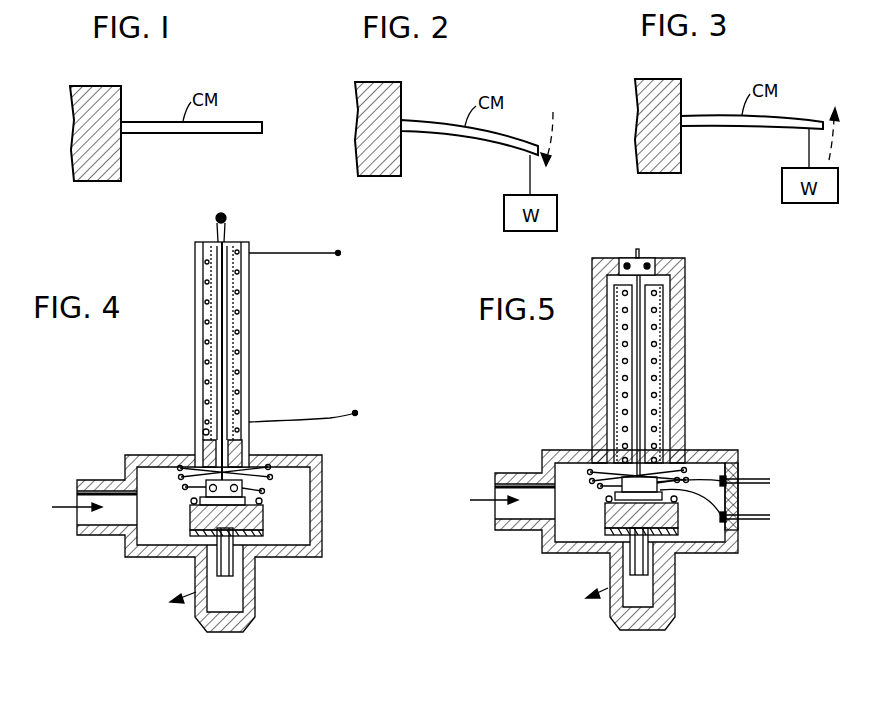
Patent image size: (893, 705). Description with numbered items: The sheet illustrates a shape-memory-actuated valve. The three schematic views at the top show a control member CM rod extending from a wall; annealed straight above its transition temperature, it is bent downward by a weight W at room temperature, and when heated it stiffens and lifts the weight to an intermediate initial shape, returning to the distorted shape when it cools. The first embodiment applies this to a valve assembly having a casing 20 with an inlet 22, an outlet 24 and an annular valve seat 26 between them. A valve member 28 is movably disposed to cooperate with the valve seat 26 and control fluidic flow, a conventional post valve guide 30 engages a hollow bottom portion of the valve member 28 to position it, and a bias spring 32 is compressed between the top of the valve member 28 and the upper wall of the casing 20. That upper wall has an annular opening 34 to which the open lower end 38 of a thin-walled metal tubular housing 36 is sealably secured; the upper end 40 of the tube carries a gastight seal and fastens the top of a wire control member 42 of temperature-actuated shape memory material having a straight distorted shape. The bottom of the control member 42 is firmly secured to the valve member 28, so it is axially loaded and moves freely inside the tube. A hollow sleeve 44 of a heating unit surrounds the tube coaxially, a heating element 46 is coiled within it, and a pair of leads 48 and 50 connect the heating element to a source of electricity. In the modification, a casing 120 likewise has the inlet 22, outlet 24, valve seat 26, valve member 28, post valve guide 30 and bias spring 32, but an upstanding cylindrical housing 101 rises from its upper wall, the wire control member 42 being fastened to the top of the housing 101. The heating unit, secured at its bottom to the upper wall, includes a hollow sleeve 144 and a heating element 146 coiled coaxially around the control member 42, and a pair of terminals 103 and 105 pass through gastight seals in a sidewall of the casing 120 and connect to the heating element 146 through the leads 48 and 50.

In FIG. 4, the casing 20 is at (322, 527).
In FIG. 5, the casing 20 is at (616, 540).
In FIG. 4, the inlet 22 is at (80, 515).
In FIG. 5, the inlet 22 is at (503, 510).
In FIG. 4, the outlet 24 is at (200, 598).
In FIG. 5, the outlet 24 is at (614, 597).
In FIG. 4, the annular valve seat 26 is at (185, 541).
In FIG. 5, the annular valve seat 26 is at (600, 535).
In FIG. 4, the valve member 28 is at (268, 532).
In FIG. 5, the valve member 28 is at (672, 528).
In FIG. 4, the post valve guide 30 is at (236, 572).
In FIG. 5, the post valve guide 30 is at (660, 565).
In FIG. 4, the bias spring 32 is at (262, 484).
In FIG. 5, the bias spring 32 is at (578, 470).
In FIG. 4, the annular opening 34 is at (275, 470).
In FIG. 4, the tubular housing 36 is at (205, 279).
In FIG. 4, the open lower end 38 is at (204, 432).
In FIG. 4, the upper end 40 is at (228, 220).
In FIG. 4, the wire control member 42 is at (222, 378).
In FIG. 5, the wire control member 42 is at (641, 404).
In FIG. 4, the hollow sleeve 44 is at (243, 280).
In FIG. 4, the heating element 46 is at (240, 347).
In FIG. 4, the lead 48 is at (339, 256).
In FIG. 5, the lead 48 is at (700, 470).
In FIG. 4, the lead 50 is at (357, 410).
In FIG. 5, the lead 50 is at (695, 508).
In FIG. 5, the cylindrical housing 101 is at (686, 365).
In FIG. 5, the terminal 103 is at (770, 481).
In FIG. 5, the terminal 105 is at (770, 517).
In FIG. 5, the casing 120 is at (738, 452).
In FIG. 5, the hollow sleeve 144 is at (613, 340).
In FIG. 5, the heating element 146 is at (655, 325).